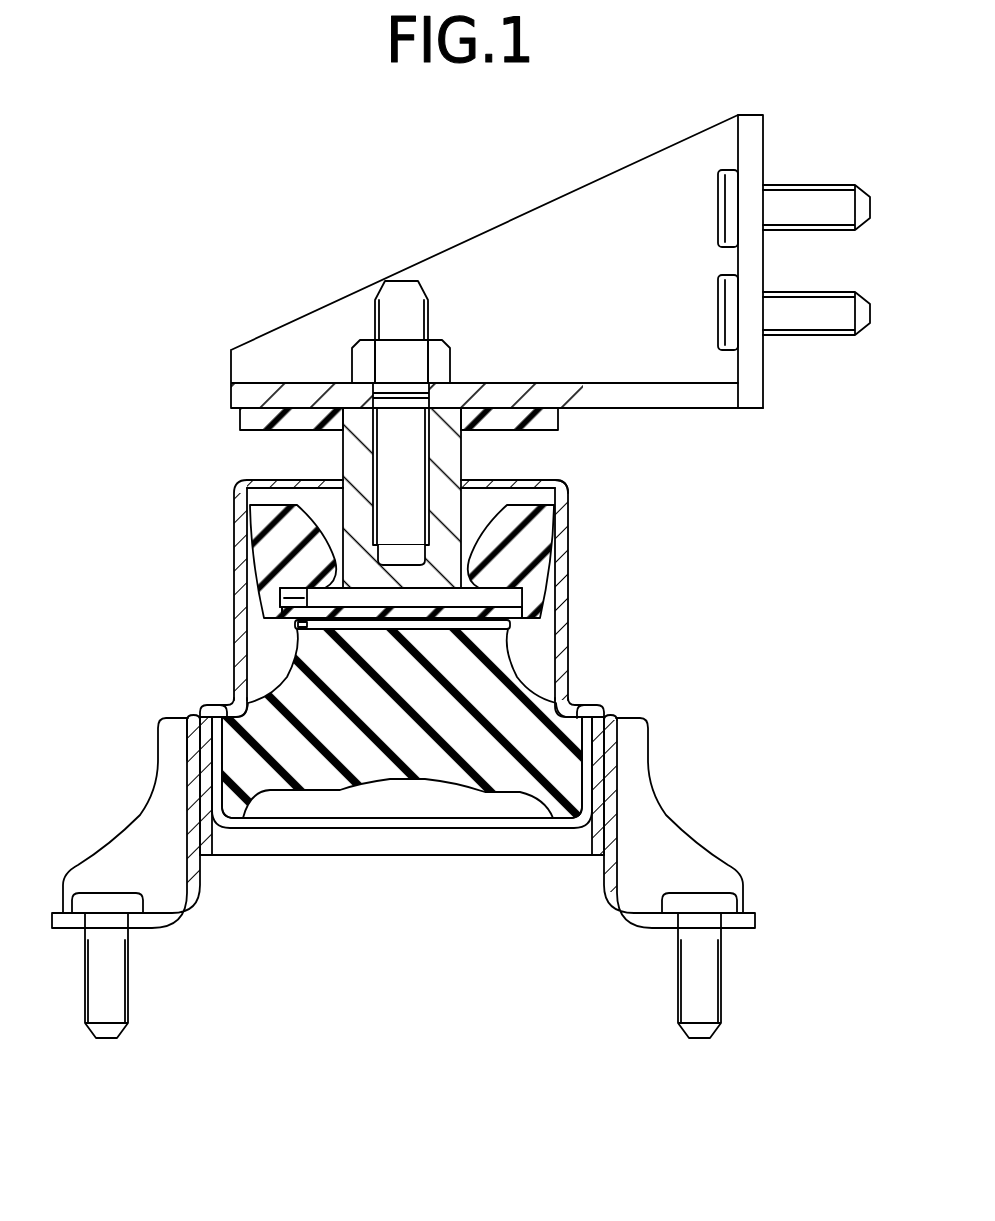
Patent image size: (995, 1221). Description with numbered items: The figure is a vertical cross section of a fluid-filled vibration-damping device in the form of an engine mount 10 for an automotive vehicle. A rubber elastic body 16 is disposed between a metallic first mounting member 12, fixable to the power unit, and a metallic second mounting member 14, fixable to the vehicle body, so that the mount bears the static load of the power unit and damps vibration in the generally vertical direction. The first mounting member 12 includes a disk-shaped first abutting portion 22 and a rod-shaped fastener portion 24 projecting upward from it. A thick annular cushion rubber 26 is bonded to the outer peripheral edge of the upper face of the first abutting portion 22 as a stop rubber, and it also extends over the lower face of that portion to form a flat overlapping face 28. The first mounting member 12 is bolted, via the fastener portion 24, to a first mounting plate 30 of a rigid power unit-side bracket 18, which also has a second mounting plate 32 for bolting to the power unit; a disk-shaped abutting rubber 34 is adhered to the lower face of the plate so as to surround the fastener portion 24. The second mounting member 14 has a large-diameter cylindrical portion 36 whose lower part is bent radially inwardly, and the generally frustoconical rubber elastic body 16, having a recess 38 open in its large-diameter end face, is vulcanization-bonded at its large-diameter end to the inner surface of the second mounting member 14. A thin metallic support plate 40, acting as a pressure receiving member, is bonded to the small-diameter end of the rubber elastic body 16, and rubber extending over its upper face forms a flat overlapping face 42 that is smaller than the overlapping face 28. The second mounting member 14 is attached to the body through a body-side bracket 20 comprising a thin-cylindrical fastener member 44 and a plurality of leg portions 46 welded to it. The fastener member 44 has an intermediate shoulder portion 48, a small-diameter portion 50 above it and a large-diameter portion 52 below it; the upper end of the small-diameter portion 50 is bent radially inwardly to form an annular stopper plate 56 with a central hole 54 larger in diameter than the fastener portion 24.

The engine mount 10 is at (606, 505).
The first mounting member 12 is at (367, 434).
The second mounting member 14 is at (400, 761).
The rubber elastic body 16 is at (417, 766).
The power unit-side bracket 18 is at (550, 286).
The body-side bracket 20 is at (404, 866).
The first abutting portion 22 is at (410, 594).
The fastener portion 24 is at (357, 457).
The cushion rubber 26 is at (535, 540).
The overlapping face 28 is at (411, 638).
The first mounting plate 30 is at (618, 404).
The second mounting plate 32 is at (757, 378).
The abutting rubber 34 is at (253, 412).
The cylindrical portion 36 is at (214, 758).
The recess 38 is at (337, 821).
The support plate 40 is at (297, 629).
The overlapping face 42 is at (283, 600).
The fastener member 44 is at (610, 752).
The leg portions 46 is at (121, 824).
The shoulder portion 48 is at (219, 706).
The small-diameter portion 50 is at (389, 579).
The large-diameter portion 52 is at (200, 732).
The central hole 54 is at (322, 478).
The stopper plate 56 is at (528, 479).